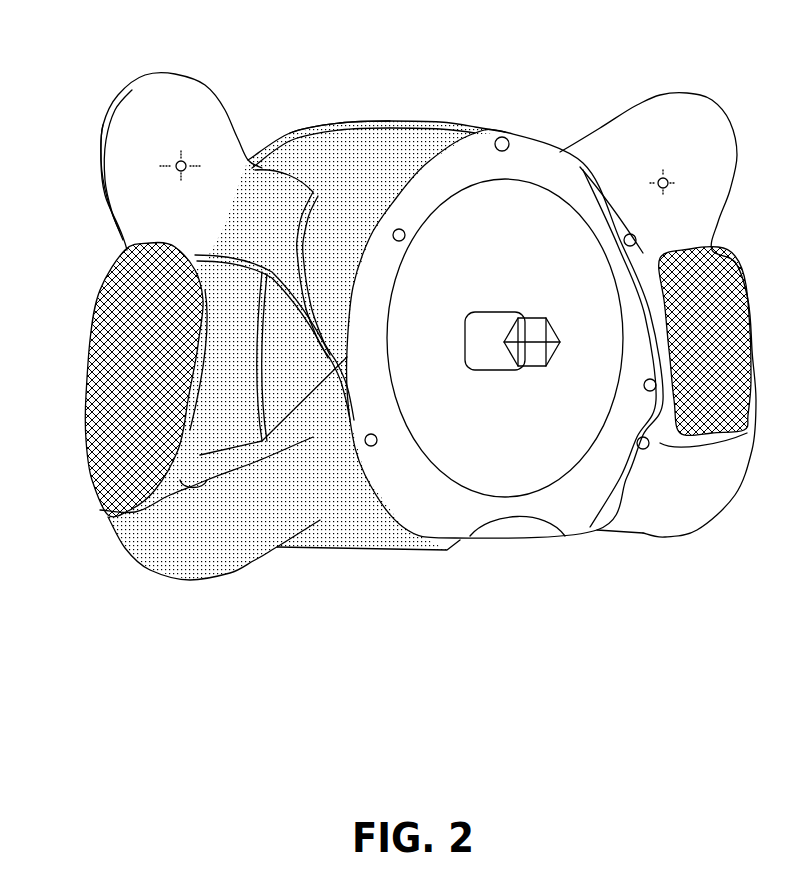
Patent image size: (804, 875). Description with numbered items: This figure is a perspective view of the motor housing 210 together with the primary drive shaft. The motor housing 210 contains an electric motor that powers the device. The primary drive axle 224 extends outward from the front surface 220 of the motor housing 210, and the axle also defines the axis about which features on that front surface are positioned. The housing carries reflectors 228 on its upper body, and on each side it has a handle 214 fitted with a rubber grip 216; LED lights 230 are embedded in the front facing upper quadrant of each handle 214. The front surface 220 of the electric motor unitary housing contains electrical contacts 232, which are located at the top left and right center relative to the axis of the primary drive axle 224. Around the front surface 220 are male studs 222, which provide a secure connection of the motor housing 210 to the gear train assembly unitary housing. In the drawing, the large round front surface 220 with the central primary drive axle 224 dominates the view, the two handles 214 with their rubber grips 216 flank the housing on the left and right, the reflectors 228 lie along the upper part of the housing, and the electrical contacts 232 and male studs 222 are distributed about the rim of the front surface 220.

The motor housing 210 is at (321, 552).
The handle 214 is at (120, 223).
The rubber grip 216 is at (92, 335).
The front surface 220 is at (542, 432).
The male stud 222 is at (374, 445).
The primary drive axle 224 is at (527, 314).
The reflector 228 is at (327, 212).
The LED light 230 is at (184, 160).
The electrical contact 232 is at (501, 136).